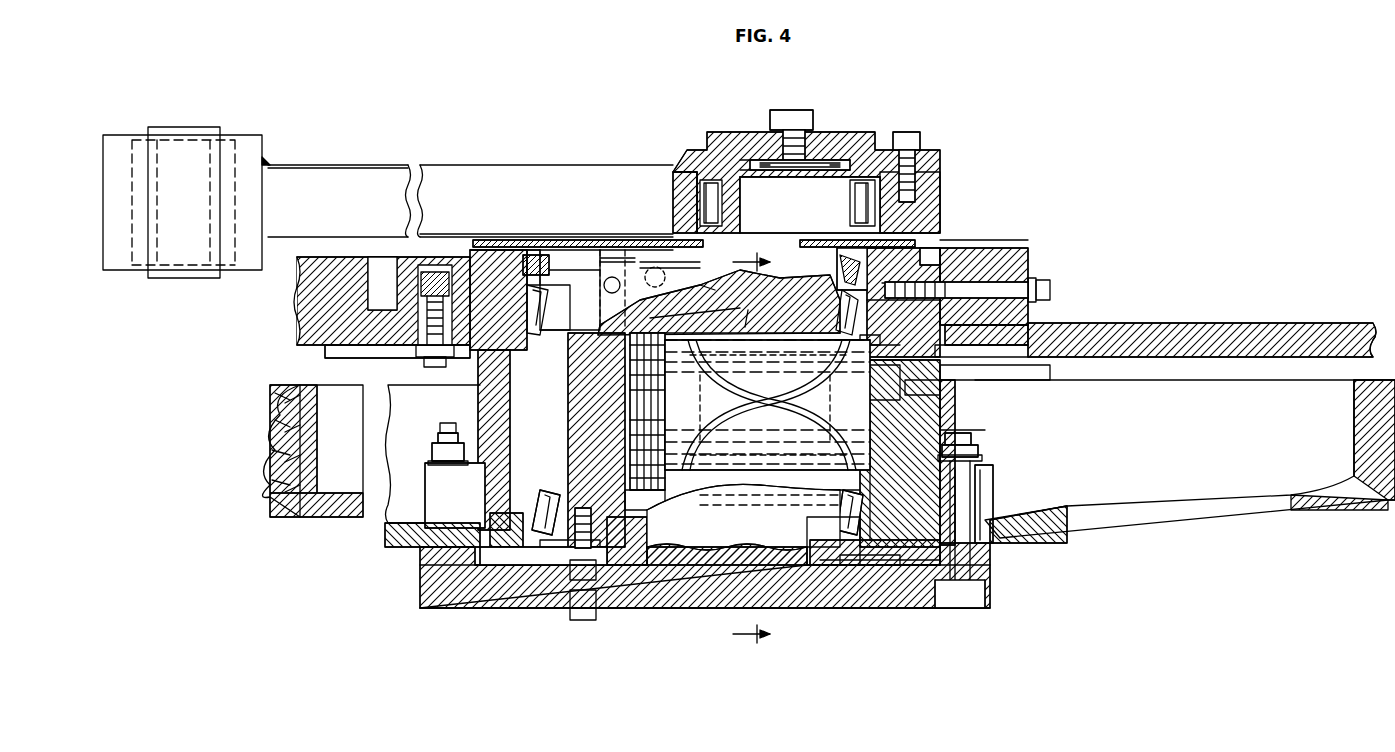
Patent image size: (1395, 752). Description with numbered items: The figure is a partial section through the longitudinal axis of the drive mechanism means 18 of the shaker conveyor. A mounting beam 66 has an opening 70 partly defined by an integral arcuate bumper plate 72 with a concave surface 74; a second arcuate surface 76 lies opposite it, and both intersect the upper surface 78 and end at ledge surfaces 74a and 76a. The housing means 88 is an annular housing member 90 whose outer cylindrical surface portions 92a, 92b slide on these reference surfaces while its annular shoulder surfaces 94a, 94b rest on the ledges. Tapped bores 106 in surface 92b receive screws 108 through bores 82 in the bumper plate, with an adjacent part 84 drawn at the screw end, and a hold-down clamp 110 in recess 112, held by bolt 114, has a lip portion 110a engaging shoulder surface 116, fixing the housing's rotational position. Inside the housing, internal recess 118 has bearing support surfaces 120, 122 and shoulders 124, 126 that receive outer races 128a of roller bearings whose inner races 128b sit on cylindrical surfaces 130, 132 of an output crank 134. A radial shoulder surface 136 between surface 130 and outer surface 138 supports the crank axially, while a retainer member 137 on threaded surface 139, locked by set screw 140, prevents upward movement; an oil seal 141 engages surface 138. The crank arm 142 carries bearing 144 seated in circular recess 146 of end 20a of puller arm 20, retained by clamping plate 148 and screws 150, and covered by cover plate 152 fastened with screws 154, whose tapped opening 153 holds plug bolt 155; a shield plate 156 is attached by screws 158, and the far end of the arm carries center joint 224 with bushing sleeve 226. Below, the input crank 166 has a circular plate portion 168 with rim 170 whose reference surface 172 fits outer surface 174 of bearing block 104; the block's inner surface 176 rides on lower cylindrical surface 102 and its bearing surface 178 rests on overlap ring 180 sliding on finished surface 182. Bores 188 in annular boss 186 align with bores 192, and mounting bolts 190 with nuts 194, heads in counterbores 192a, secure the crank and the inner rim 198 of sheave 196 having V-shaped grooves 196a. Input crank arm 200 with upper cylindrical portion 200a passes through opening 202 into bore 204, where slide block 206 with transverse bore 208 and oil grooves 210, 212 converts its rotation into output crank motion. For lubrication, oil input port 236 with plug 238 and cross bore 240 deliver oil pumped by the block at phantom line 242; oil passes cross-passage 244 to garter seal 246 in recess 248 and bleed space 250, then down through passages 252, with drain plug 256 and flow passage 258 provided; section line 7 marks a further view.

The drive mechanism means 18 is at (355, 640).
The puller arm 20 is at (340, 160).
The end of puller arm 20a is at (945, 185).
The mounting beam 66 is at (1190, 325).
The opening 70 is at (903, 315).
The bumper plate 72 is at (1025, 250).
The concave surface 74 is at (960, 248).
The ledge surface 74a is at (940, 333).
The second arcuate surface 76 is at (520, 325).
The ledge surface 76a is at (530, 320).
The upper surface 78 is at (990, 262).
The bores 82 is at (1030, 262).
The bolt head 84 is at (1048, 300).
The housing means 88 is at (930, 240).
The housing member 90 is at (536, 255).
The outer cylindrical surface portion 92a is at (478, 245).
The outer cylindrical surface portion 92b is at (930, 250).
The annular shoulder surface 94a is at (385, 305).
The annular shoulder surface 94b is at (945, 350).
The lower cylindrical surface 102 is at (940, 412).
The bearing block 104 is at (970, 428).
The tapped bores 106 is at (916, 259).
The screws 108 is at (1045, 288).
The hold-down clamp 110 is at (300, 292).
The lip portion 110a is at (495, 250).
The recess 112 is at (345, 352).
The bolt 114 is at (425, 350).
The annular shoulder surface 116 is at (498, 300).
The internal recess 118 is at (900, 453).
The bearing support surface 120 is at (906, 279).
The bearing support surface 122 is at (865, 515).
The annular shoulder surface 124 is at (879, 356).
The annular shoulder surface 126 is at (887, 470).
The outer races 128a is at (890, 342).
The inner races 128b is at (830, 300).
The cylindrical surface 130 is at (763, 321).
The cylindrical surface 132 is at (812, 538).
The output crank 134 is at (572, 248).
The radial shoulder surface 136 is at (572, 307).
The retainer member 137 is at (848, 568).
The outer cylindrical surface 138 is at (574, 269).
The threaded annular surface 139 is at (822, 568).
The set screw 140 is at (655, 532).
The annular oil seal 141 is at (546, 252).
The crank arm 142 is at (850, 178).
The bearing 144 is at (728, 203).
The circular recess 146 is at (676, 170).
The clamping plate 148 is at (740, 178).
The screws 150 is at (740, 165).
The cover plate 152 is at (808, 110).
The tapped opening 153 is at (825, 160).
The screws 154 is at (915, 128).
The plug bolt 155 is at (800, 120).
The shield plate 156 is at (660, 260).
The screws 158 is at (712, 296).
The input crank 166 is at (668, 612).
The circular plate portion 168 is at (498, 608).
The annular upstanding rim 170 is at (440, 575).
The inner cylindrical reference surface 172 is at (445, 585).
The outer cylindrical surface 174 is at (420, 548).
The inner cylindrical surface 176 is at (480, 412).
The annular bearing surface 178 is at (495, 532).
The overlap ring 180 is at (478, 608).
The annular radial finished surface 182 is at (540, 570).
The annular boss 186 is at (995, 485).
The bores 188 is at (995, 500).
The mounting bolts 190 is at (440, 428).
The bores 192 is at (985, 588).
The counterbores 192a is at (985, 605).
The nuts 194 is at (432, 451).
The sheave 196 is at (1322, 505).
The V-shaped grooves 196a is at (265, 440).
The inner annular rim portion 198 is at (1060, 535).
The input crank arm 200 is at (712, 540).
The upper cylindrical portion 200a is at (740, 485).
The opening 202 is at (668, 505).
The cylindrical bore 204 is at (735, 322).
The slide block 206 is at (708, 305).
The transverse cylindrical bore 208 is at (798, 405).
The oil groove 210 is at (730, 430).
The oil groove 212 is at (790, 440).
The center joint 224 is at (248, 130).
The bushing sleeve 226 is at (148, 130).
The oil input port 236 is at (603, 248).
The plug 238 is at (630, 245).
The cross bore passage 240 is at (634, 293).
The phantom line 242 is at (596, 440).
The cross-passage 244 is at (879, 389).
The garter type oil seal 246 is at (995, 370).
The recess 248 is at (925, 398).
The bleed space 250 is at (478, 396).
The flow passages 252 is at (548, 552).
The drain plug 256 is at (588, 622).
The flow passage 258 is at (719, 302).
The section line 7 is at (761, 449).